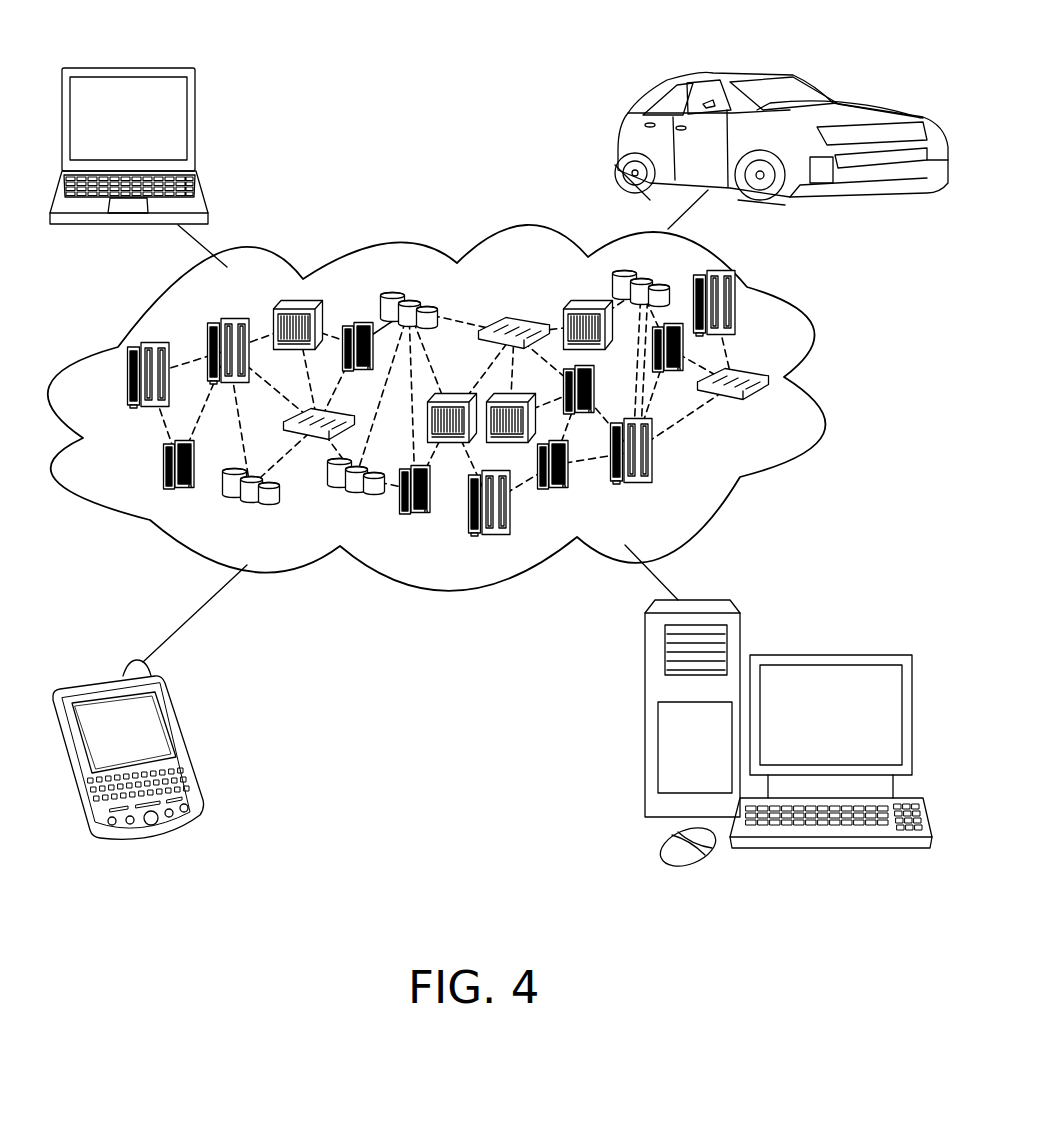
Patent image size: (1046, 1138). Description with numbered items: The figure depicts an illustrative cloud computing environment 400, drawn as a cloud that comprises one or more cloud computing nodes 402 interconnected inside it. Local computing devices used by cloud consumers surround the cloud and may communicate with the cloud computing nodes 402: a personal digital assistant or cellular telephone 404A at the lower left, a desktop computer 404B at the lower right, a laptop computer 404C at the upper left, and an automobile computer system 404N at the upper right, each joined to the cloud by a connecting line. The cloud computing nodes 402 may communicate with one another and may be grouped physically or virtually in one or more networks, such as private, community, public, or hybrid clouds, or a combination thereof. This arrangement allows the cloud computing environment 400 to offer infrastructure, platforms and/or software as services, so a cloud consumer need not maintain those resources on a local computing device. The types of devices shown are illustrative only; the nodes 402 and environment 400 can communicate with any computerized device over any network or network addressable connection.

The cloud computing environment 400 is at (807, 372).
The cloud computing nodes 402 is at (770, 408).
The personal digital assistant (PDA) or cellular telephone 404A is at (175, 713).
The desktop computer 404B is at (817, 655).
The laptop computer 404C is at (197, 104).
The automobile computer system 404N is at (622, 144).